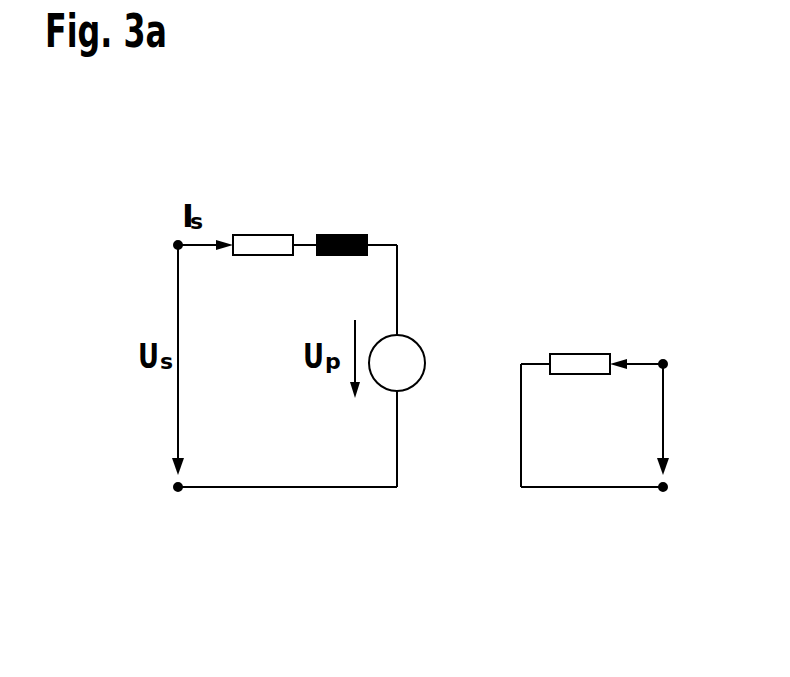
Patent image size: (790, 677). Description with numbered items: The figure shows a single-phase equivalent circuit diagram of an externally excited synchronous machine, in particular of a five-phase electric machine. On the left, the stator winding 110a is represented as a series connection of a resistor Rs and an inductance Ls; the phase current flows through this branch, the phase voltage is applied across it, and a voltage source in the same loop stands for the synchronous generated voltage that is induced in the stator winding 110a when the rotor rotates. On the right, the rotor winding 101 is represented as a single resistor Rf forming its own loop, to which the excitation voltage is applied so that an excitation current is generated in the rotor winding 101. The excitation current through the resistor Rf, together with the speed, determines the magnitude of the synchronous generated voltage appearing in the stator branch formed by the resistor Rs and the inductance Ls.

The stator winding 110a is at (300, 187).
The rotor winding 101 is at (612, 343).
The resistor Rs is at (263, 225).
The inductance Ls is at (342, 225).
The resistor Rf is at (580, 343).